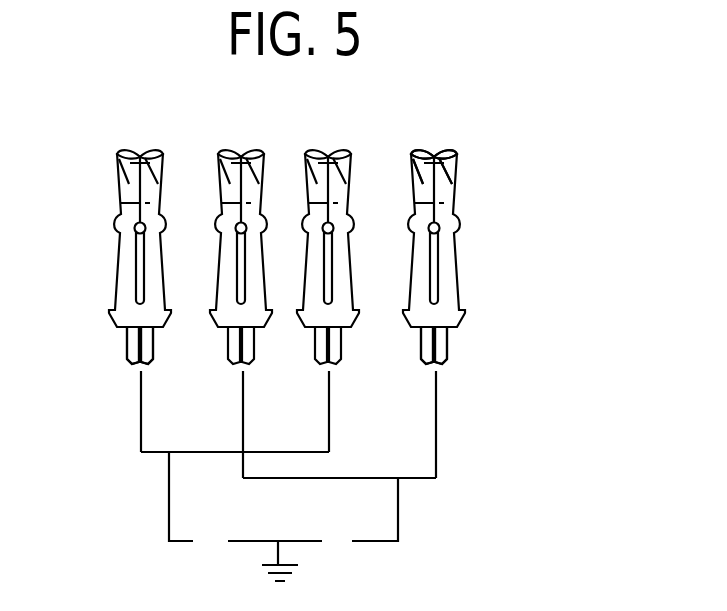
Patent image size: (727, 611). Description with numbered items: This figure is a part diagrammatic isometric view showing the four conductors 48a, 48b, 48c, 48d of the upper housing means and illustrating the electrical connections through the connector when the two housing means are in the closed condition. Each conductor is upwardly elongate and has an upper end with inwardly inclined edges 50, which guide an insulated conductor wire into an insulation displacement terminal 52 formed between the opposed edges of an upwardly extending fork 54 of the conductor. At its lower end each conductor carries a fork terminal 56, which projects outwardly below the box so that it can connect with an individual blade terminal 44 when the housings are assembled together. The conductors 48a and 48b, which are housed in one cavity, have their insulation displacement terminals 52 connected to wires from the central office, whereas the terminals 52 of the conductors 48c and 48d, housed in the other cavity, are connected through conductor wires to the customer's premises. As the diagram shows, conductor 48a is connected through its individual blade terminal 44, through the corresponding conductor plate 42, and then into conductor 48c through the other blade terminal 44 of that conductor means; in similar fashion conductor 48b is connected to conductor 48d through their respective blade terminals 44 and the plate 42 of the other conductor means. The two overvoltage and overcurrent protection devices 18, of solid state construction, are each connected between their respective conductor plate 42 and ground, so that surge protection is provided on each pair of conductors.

The conductor 48a is at (151, 152).
The conductor 48b is at (256, 152).
The conductor 48c is at (344, 152).
The conductor 48d is at (458, 234).
The inwardly inclined edges 50 is at (449, 152).
The insulation displacement terminal 52 is at (433, 183).
The upwardly extending fork 54 is at (448, 201).
The fork terminal 56 is at (127, 343).
The blade terminal 44 is at (140, 398).
The conductor plate 42 is at (210, 452).
The overvoltage and overcurrent protection device 18 is at (214, 555).